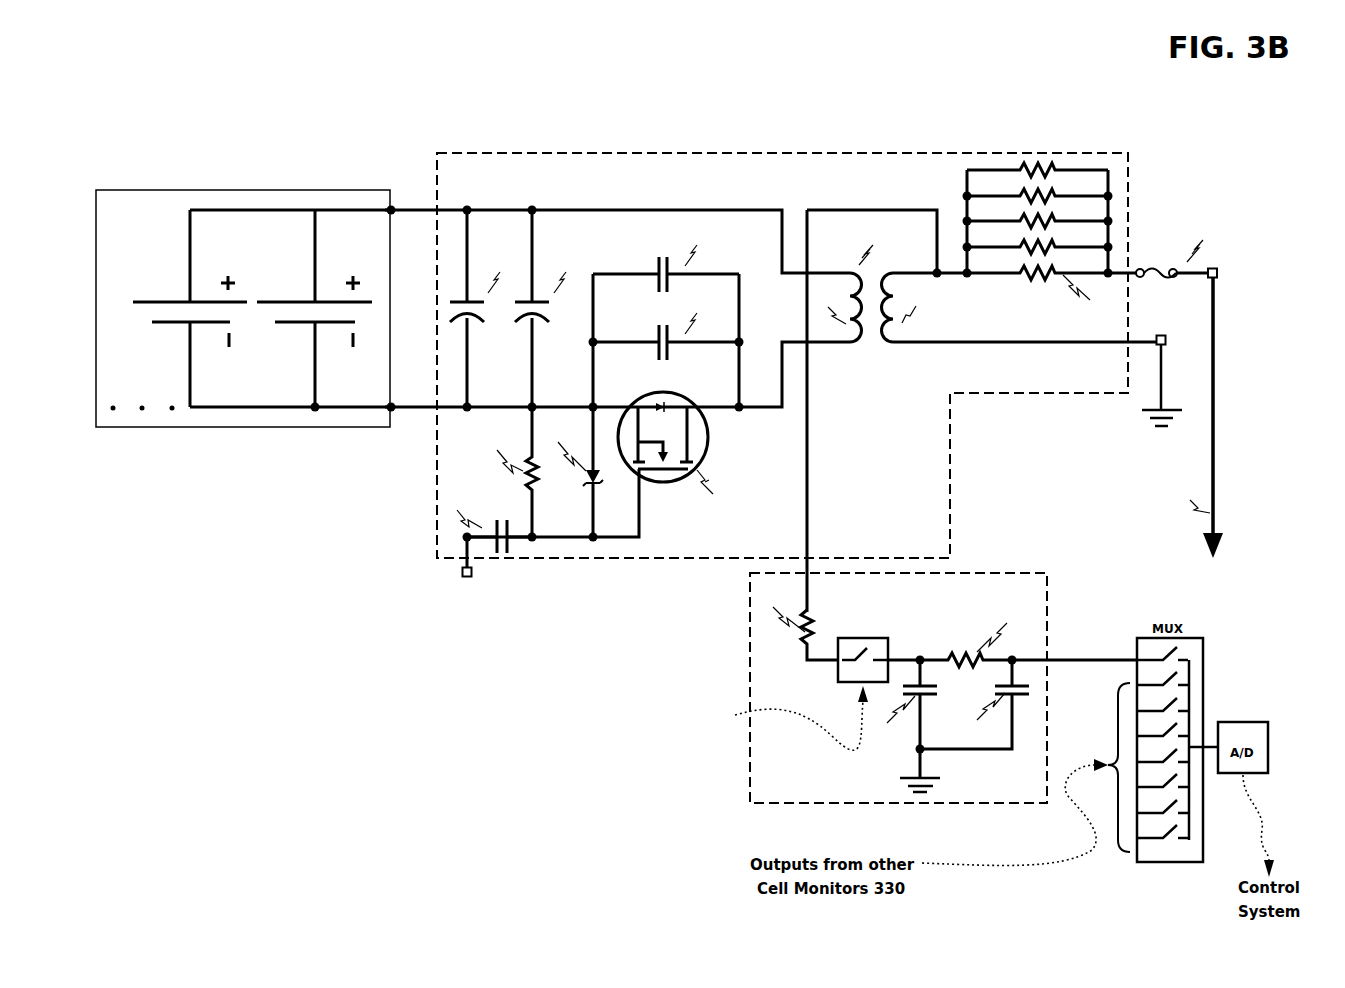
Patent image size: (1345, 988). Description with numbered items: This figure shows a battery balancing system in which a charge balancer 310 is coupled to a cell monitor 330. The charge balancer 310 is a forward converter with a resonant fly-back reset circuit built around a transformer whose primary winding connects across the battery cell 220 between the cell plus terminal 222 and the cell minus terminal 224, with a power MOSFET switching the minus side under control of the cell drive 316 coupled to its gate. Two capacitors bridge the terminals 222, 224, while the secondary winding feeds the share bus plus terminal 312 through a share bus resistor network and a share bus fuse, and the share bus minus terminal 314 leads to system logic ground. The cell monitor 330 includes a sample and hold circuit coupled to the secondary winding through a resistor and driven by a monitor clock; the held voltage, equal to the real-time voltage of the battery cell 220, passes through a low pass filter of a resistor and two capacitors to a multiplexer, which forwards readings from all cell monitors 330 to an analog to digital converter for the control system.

The battery cell 220 is at (129, 188).
The cell plus terminal 222 is at (387, 212).
The cell minus terminal 224 is at (387, 407).
The charge balancer 310 is at (826, 382).
The share bus plus terminal 312 is at (1222, 272).
The share bus minus terminal 314 is at (1165, 338).
The cell drive 316 is at (460, 568).
The cell monitor 330 is at (875, 688).